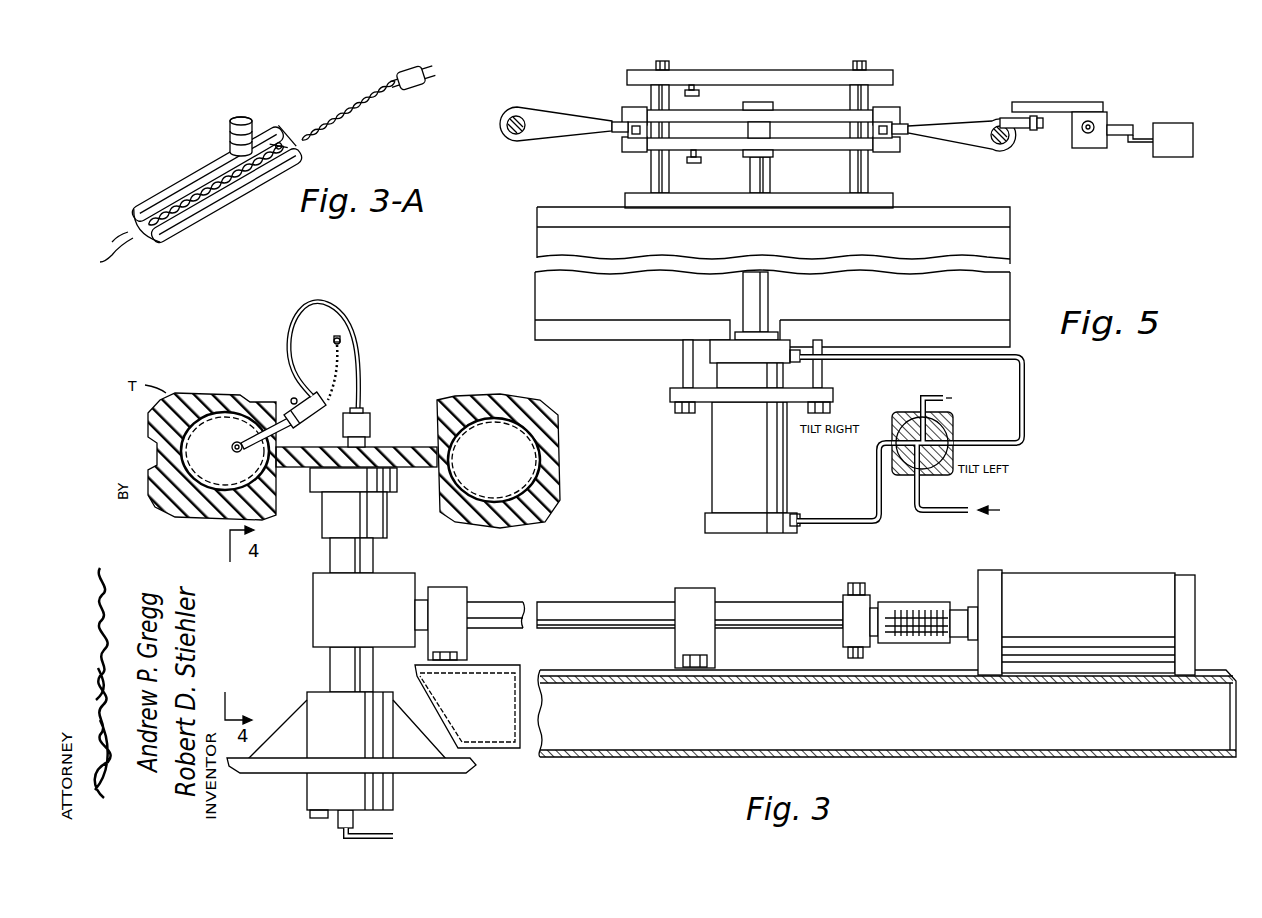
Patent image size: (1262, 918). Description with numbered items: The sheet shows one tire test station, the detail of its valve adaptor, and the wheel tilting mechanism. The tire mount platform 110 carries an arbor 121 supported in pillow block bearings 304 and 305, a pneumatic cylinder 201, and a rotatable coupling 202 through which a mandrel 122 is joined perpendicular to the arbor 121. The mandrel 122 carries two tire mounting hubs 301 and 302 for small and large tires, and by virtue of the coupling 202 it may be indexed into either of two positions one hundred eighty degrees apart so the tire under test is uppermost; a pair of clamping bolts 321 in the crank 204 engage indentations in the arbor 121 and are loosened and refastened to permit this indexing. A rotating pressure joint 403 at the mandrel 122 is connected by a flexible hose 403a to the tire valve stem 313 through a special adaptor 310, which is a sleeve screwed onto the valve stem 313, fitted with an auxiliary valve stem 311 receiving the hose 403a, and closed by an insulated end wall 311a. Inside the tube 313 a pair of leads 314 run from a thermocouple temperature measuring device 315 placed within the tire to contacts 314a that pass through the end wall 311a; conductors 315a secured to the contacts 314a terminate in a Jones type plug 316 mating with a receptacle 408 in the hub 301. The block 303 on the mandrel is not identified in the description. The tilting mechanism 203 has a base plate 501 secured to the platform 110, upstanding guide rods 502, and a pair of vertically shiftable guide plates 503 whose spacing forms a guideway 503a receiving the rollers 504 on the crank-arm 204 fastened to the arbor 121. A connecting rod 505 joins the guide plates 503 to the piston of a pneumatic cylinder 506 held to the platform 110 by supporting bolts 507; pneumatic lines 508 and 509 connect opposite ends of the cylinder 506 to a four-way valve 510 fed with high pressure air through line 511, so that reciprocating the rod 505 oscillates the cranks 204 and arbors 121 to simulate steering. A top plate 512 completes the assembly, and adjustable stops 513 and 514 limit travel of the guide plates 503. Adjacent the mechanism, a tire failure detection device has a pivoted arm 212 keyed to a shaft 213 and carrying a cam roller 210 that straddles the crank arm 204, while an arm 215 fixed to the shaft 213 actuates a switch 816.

In FIG. 5, the tire mount platform 110 is at (1000, 222).
In FIG. 3, the tire mount platform 110 is at (1218, 700).
In FIG. 5, the arbor 121 is at (508, 122).
In FIG. 3, the arbor 121 is at (760, 603).
In FIG. 3, the mandrel 122 is at (330, 554).
In FIG. 3, the pneumatic cylinder 201 is at (1070, 575).
In FIG. 3, the rotatable coupling 202 is at (892, 603).
In FIG. 5, the tilting mechanism 203 is at (614, 106).
In FIG. 5, the crank-arm 204 is at (965, 122).
In FIG. 3, the crank-arm 204 is at (846, 637).
In FIG. 5, the cam roller 210 is at (1033, 130).
In FIG. 5, the pivoted arm 212 is at (1032, 102).
In FIG. 5, the shaft 213 is at (1088, 135).
In FIG. 5, the arm 215 is at (1125, 124).
In FIG. 3, the tire mounting hub 301 is at (446, 775).
In FIG. 3, the tire mounting hub 302 is at (405, 432).
In FIG. 3, the housing block 303 is at (400, 573).
In FIG. 3, the pillow block bearing 304 is at (455, 588).
In FIG. 3, the pillow block bearing 305 is at (703, 589).
In FIG. 3A, the adaptor 310 is at (246, 198).
In FIG. 3, the adaptor 310 is at (313, 411).
In FIG. 3A, the auxiliary valve stem 311 is at (229, 127).
In FIG. 3, the auxiliary valve stem 311 is at (293, 397).
In FIG. 3A, the insulated end wall 311a is at (275, 190).
In FIG. 3A, the tire valve stem 313 is at (178, 188).
In FIG. 3, the tire valve stem 313 is at (283, 431).
In FIG. 3A, the leads 314 is at (131, 243).
In FIG. 3A, the contacts 314a is at (302, 152).
In FIG. 3, the thermocouple temperature measuring device 315 is at (237, 452).
In FIG. 3A, the conductors 315a is at (349, 92).
In FIG. 3, the conductors 315a is at (336, 361).
In FIG. 3A, the Jones type plug 316 is at (414, 66).
In FIG. 3, the Jones type plug 316 is at (337, 339).
In FIG. 3, the clamping bolts 321 is at (862, 586).
In FIG. 3, the rotating pressure joint 403 is at (390, 406).
In FIG. 3, the flexible hose 403a is at (366, 339).
In FIG. 3, the receptacle 408 is at (313, 817).
In FIG. 5, the base plate 501 is at (893, 196).
In FIG. 5, the guide rods 502 is at (651, 172).
In FIG. 5, the guide plates 503 is at (790, 110).
In FIG. 5, the guideway 503a is at (800, 132).
In FIG. 5, the rollers 504 is at (900, 126).
In FIG. 5, the connecting rod 505 is at (746, 158).
In FIG. 5, the pneumatic cylinder 506 is at (712, 458).
In FIG. 5, the supporting bolts 507 is at (683, 372).
In FIG. 5, the pneumatic line 508 is at (828, 521).
In FIG. 5, the pneumatic line 509 is at (874, 358).
In FIG. 5, the four-way valve 510 is at (955, 428).
In FIG. 5, the air supply line 511 is at (933, 507).
In FIG. 5, the top plate 512 is at (892, 72).
In FIG. 5, the adjustable stop 513 is at (700, 92).
In FIG. 5, the adjustable stop 514 is at (694, 164).
In FIG. 5, the switch 816 is at (1183, 157).